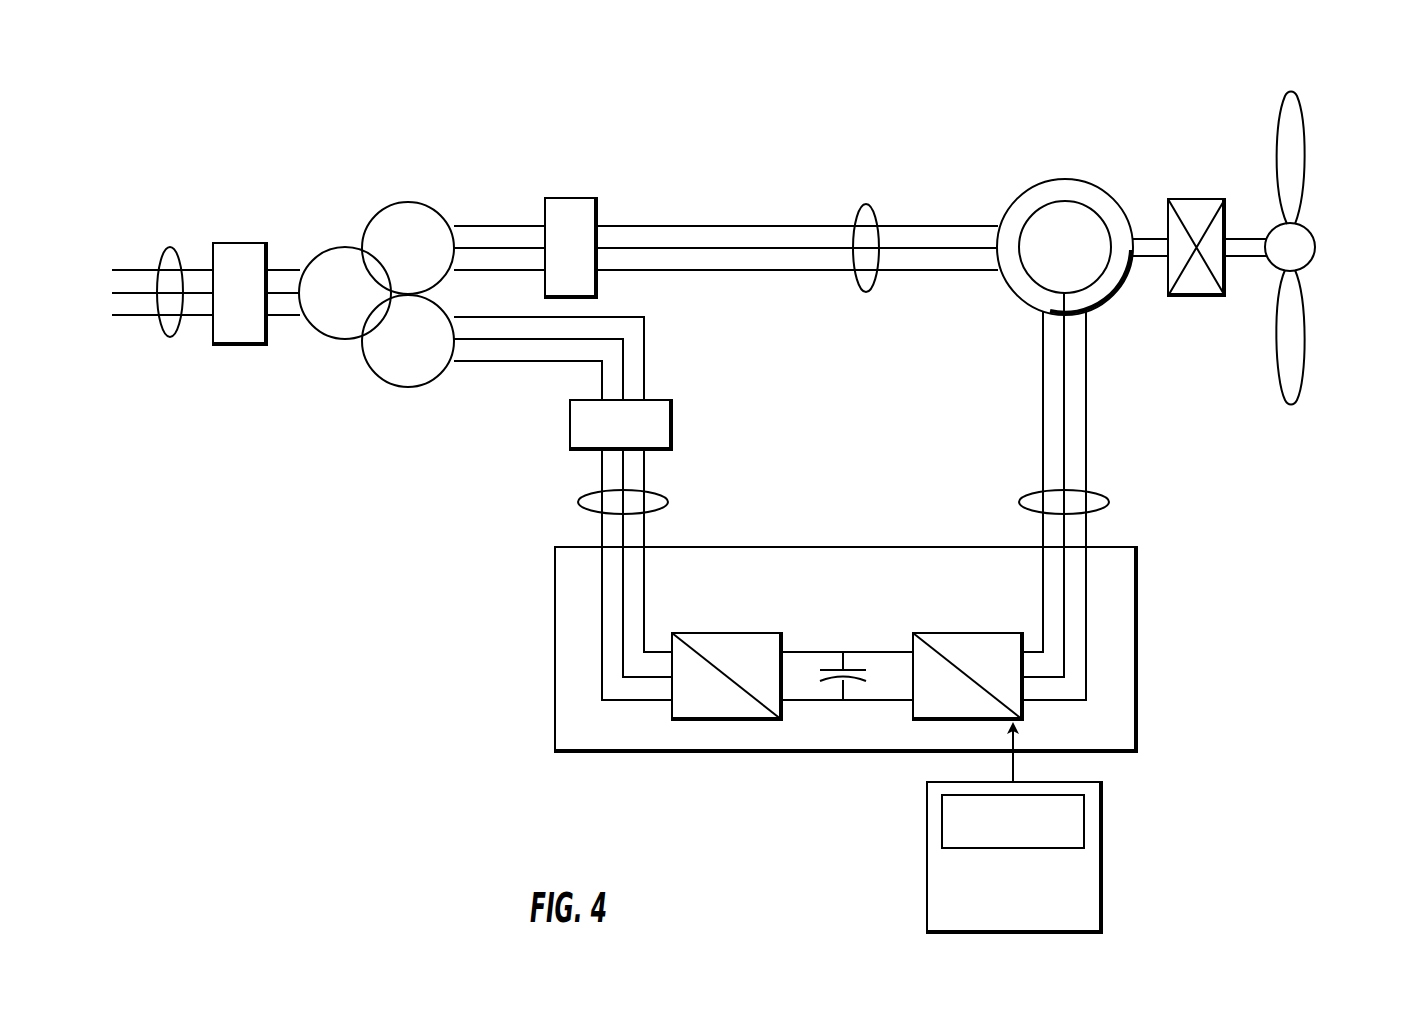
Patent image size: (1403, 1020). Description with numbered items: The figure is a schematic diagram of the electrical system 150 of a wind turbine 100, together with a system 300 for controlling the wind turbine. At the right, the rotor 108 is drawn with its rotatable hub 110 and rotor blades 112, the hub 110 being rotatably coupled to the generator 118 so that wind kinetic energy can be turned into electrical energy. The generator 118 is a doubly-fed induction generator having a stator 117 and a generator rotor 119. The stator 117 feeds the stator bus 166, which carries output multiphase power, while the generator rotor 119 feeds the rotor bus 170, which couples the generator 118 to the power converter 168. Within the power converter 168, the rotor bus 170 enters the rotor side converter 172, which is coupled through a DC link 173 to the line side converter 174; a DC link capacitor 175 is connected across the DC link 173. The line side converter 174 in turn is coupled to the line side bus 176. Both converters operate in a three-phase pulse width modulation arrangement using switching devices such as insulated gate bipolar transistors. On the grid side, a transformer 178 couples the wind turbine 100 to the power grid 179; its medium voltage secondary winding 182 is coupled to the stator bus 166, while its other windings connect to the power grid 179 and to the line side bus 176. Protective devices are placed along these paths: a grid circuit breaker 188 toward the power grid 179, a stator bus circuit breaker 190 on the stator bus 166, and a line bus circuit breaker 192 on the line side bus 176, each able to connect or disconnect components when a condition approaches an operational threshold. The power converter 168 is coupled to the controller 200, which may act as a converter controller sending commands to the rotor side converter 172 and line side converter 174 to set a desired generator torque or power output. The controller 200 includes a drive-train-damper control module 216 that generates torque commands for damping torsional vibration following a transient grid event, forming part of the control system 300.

The wind turbine 100 is at (934, 190).
The rotor 108 is at (1264, 261).
The rotatable hub 110 is at (1312, 262).
The rotor blade 112 is at (1303, 198).
The stator 117 is at (1114, 200).
The generator 118 is at (1075, 236).
The generator rotor 119 is at (1100, 290).
The electrical system 150 is at (760, 90).
The stator bus 166 is at (866, 204).
The power converter 168 is at (1137, 630).
The rotor bus 170 is at (1109, 502).
The rotor side converter 172 is at (913, 712).
The DC link 173 is at (842, 691).
The line side converter 174 is at (709, 720).
The DC link capacitor 175 is at (826, 677).
The line side bus 176 is at (668, 502).
The transformer 178 is at (376, 236).
The power grid 179 is at (170, 247).
The secondary winding 182 is at (408, 202).
The grid circuit breaker 188 is at (250, 243).
The stator bus circuit breaker 190 is at (560, 198).
The line bus circuit breaker 192 is at (672, 420).
The controller 200 is at (1083, 828).
The drive-train-damper control module 216 is at (1080, 816).
The system 300 is at (1120, 60).